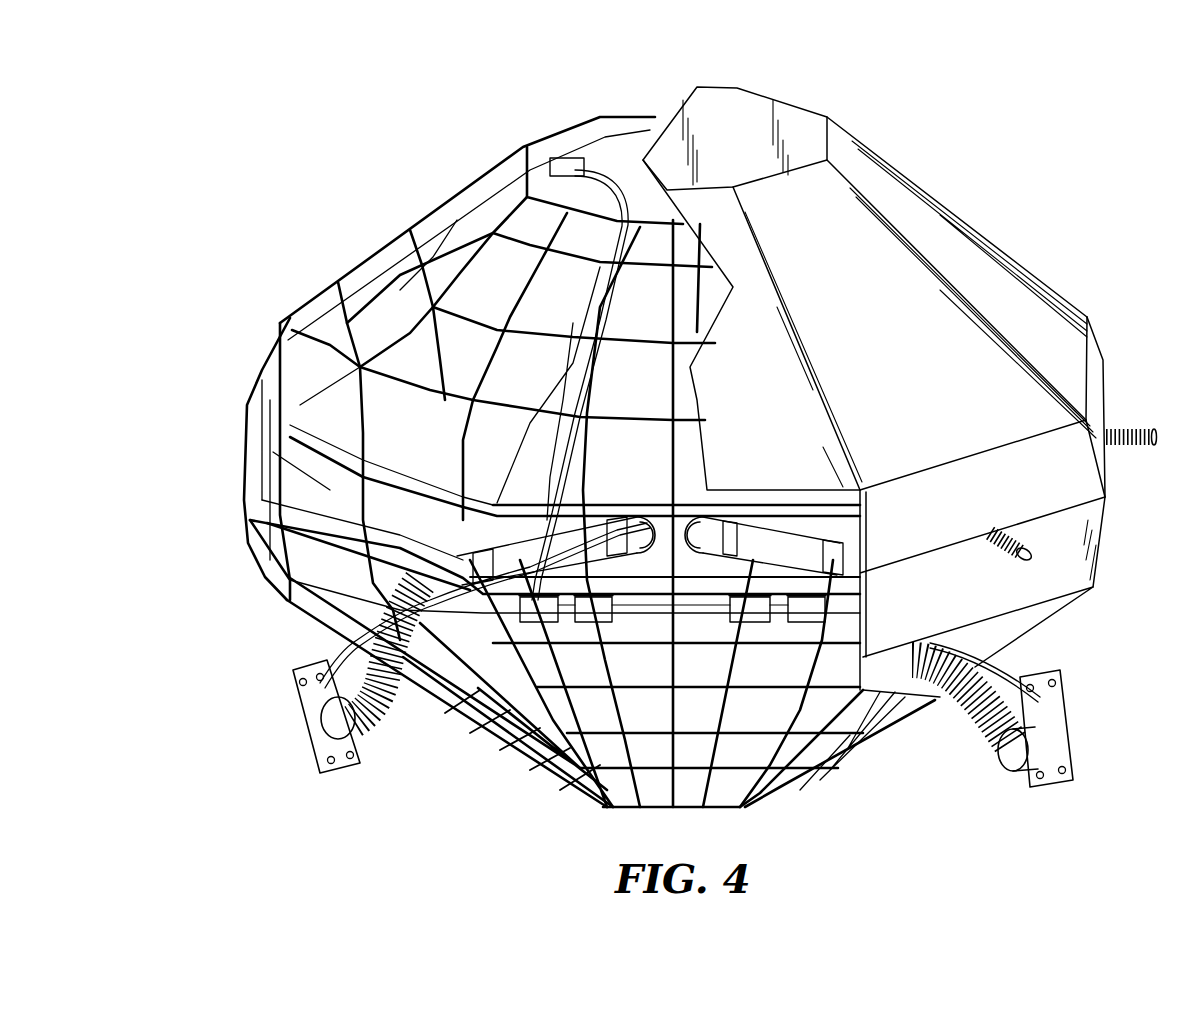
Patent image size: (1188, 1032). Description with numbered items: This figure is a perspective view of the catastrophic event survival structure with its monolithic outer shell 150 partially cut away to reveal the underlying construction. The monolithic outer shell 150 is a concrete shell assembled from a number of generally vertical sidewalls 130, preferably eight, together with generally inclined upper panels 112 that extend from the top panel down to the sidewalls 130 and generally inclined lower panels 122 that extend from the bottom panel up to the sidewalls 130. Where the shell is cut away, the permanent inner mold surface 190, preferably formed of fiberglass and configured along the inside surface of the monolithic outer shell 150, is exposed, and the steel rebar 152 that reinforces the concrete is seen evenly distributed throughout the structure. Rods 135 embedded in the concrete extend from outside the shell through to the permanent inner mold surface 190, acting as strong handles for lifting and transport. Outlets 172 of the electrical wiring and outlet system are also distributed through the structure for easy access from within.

The monolithic outer shell 150 is at (1008, 234).
The generally inclined upper panel 112 is at (1012, 296).
The generally vertical sidewall 130 is at (1000, 507).
The generally inclined lower panel 122 is at (998, 651).
The rod 135 is at (1122, 445).
The steel rebar 152 is at (343, 290).
The outlet 172 is at (575, 154).
The permanent inner mold surface 190 is at (296, 465).